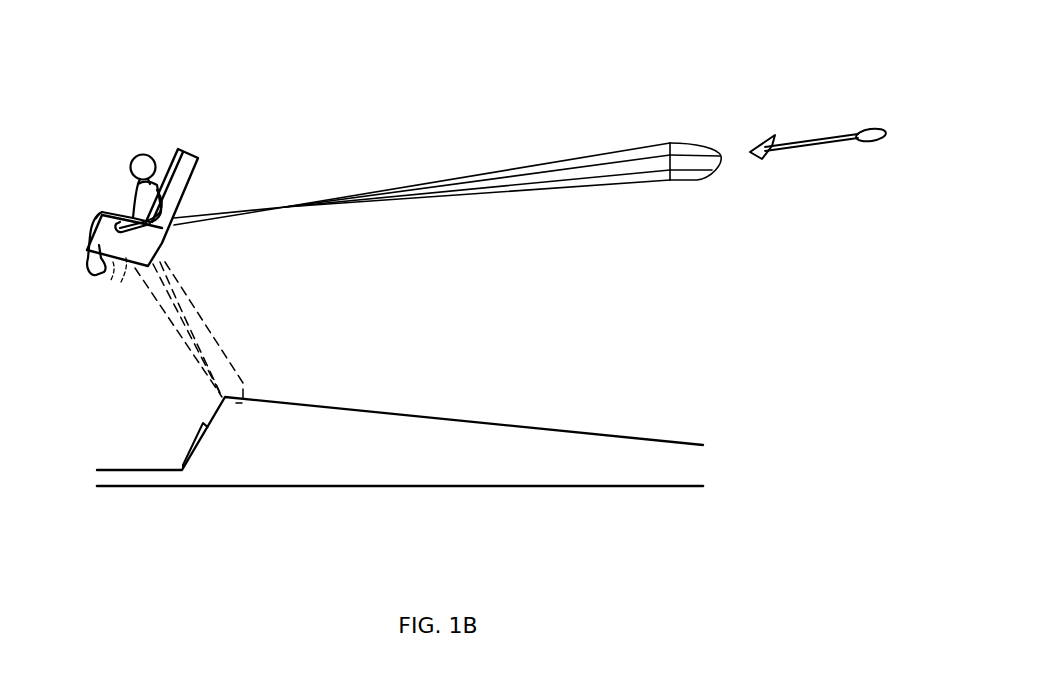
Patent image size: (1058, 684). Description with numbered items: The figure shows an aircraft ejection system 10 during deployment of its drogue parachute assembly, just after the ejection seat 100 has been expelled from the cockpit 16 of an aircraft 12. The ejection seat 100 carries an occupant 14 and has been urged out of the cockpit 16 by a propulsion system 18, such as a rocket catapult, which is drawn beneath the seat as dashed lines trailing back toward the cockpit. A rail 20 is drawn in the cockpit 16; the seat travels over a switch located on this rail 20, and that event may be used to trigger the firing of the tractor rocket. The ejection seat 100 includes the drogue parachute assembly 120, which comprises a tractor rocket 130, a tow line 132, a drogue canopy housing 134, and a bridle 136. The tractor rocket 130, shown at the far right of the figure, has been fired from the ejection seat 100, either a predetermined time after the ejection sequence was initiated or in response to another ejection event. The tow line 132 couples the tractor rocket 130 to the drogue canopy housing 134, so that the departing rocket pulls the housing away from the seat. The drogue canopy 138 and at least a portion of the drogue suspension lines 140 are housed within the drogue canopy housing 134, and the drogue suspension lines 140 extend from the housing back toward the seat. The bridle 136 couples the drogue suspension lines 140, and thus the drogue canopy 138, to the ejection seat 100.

The aircraft ejection system 10 is at (146, 90).
The aircraft 12 is at (388, 475).
The occupant 14 is at (133, 168).
The cockpit 16 is at (108, 440).
The propulsion system 18 is at (200, 325).
The rail 20 is at (196, 456).
The ejection seat 100 is at (183, 164).
The drogue parachute assembly 120 is at (487, 132).
The tractor rocket 130 is at (872, 128).
The tow line 132 is at (800, 142).
The drogue canopy housing 134 is at (763, 158).
The bridle 136 is at (270, 208).
The drogue canopy 138 is at (698, 181).
The drogue suspension lines 140 is at (550, 190).